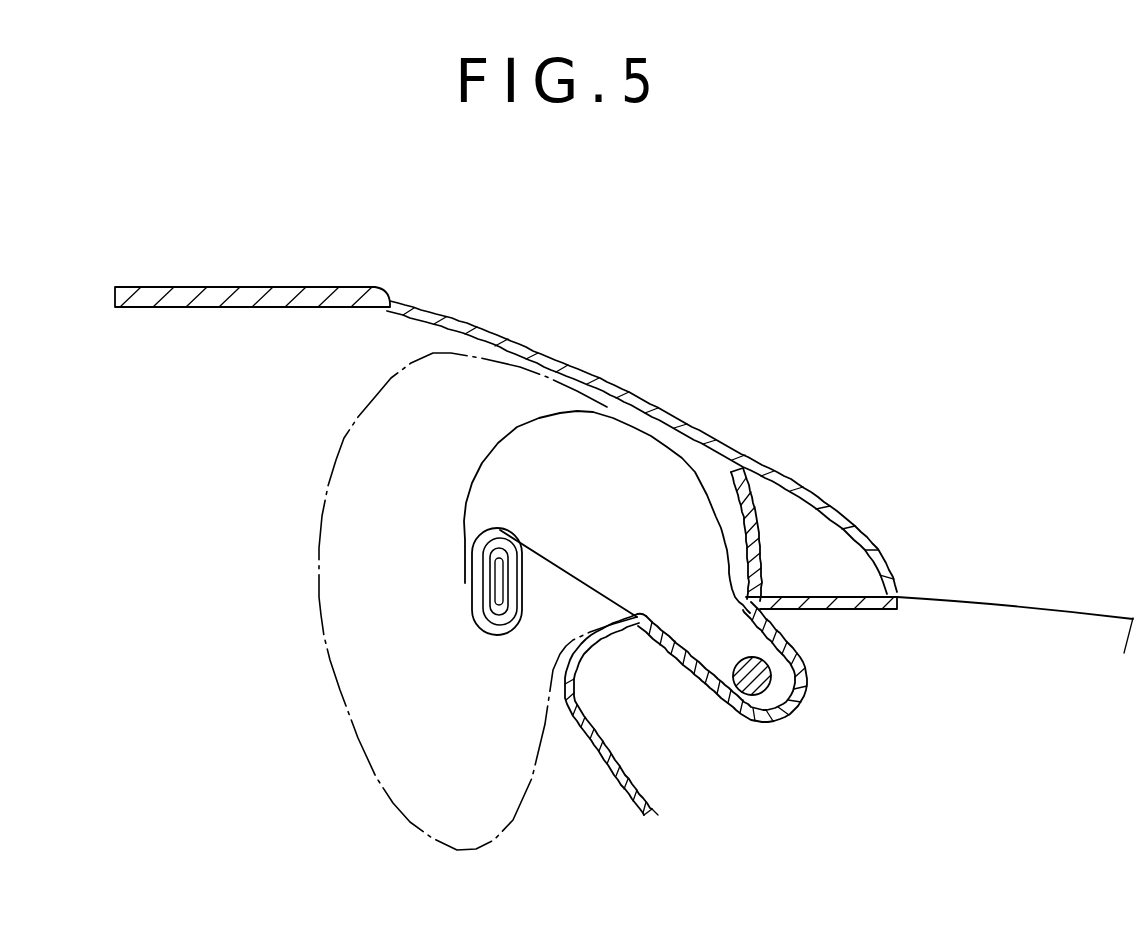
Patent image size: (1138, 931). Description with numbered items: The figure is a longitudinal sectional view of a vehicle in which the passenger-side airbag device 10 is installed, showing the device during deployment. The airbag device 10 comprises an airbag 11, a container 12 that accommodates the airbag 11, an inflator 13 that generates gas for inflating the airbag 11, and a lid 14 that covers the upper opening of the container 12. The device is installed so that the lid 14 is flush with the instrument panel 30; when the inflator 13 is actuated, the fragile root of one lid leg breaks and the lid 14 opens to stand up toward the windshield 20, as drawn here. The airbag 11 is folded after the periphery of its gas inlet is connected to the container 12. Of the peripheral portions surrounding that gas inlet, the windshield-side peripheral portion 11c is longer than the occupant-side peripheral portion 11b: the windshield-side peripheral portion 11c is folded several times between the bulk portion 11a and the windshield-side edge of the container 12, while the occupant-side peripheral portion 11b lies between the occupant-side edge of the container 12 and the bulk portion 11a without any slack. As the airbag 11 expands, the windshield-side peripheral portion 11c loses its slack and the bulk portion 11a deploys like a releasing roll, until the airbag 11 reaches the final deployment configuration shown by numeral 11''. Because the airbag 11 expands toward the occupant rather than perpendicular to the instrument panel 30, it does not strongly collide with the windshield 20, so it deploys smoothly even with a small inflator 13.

The passenger-side airbag device 10 is at (799, 742).
The airbag 11 is at (383, 497).
The bulk portion 11a is at (465, 583).
The occupant-side peripheral portion 11b is at (546, 562).
The windshield-side peripheral portion 11c is at (695, 470).
The final deployment configuration of the airbag 11'' is at (423, 601).
The container 12 is at (715, 700).
The inflator 13 is at (752, 695).
The lid 14 is at (762, 537).
The windshield 20 is at (634, 395).
The instrument panel 30 is at (833, 609).